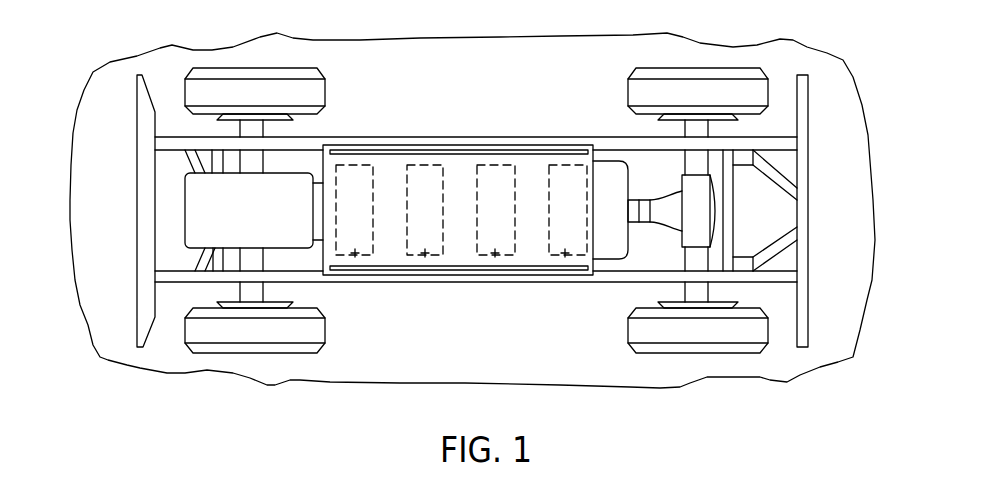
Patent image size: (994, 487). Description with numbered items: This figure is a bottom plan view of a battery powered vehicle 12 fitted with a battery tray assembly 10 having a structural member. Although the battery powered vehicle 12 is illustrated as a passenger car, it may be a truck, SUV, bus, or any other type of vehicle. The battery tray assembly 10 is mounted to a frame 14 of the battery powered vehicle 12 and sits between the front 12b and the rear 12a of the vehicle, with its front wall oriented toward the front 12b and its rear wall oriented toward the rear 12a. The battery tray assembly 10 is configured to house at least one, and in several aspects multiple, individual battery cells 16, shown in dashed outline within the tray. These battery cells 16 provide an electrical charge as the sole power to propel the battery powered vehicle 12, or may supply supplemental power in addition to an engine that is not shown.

The battery tray assembly 10 is at (528, 126).
The battery powered vehicle 12 is at (560, 36).
The rear 12a is at (870, 286).
The front 12b is at (80, 305).
The frame 14 is at (614, 276).
The battery cells 16 is at (425, 258).